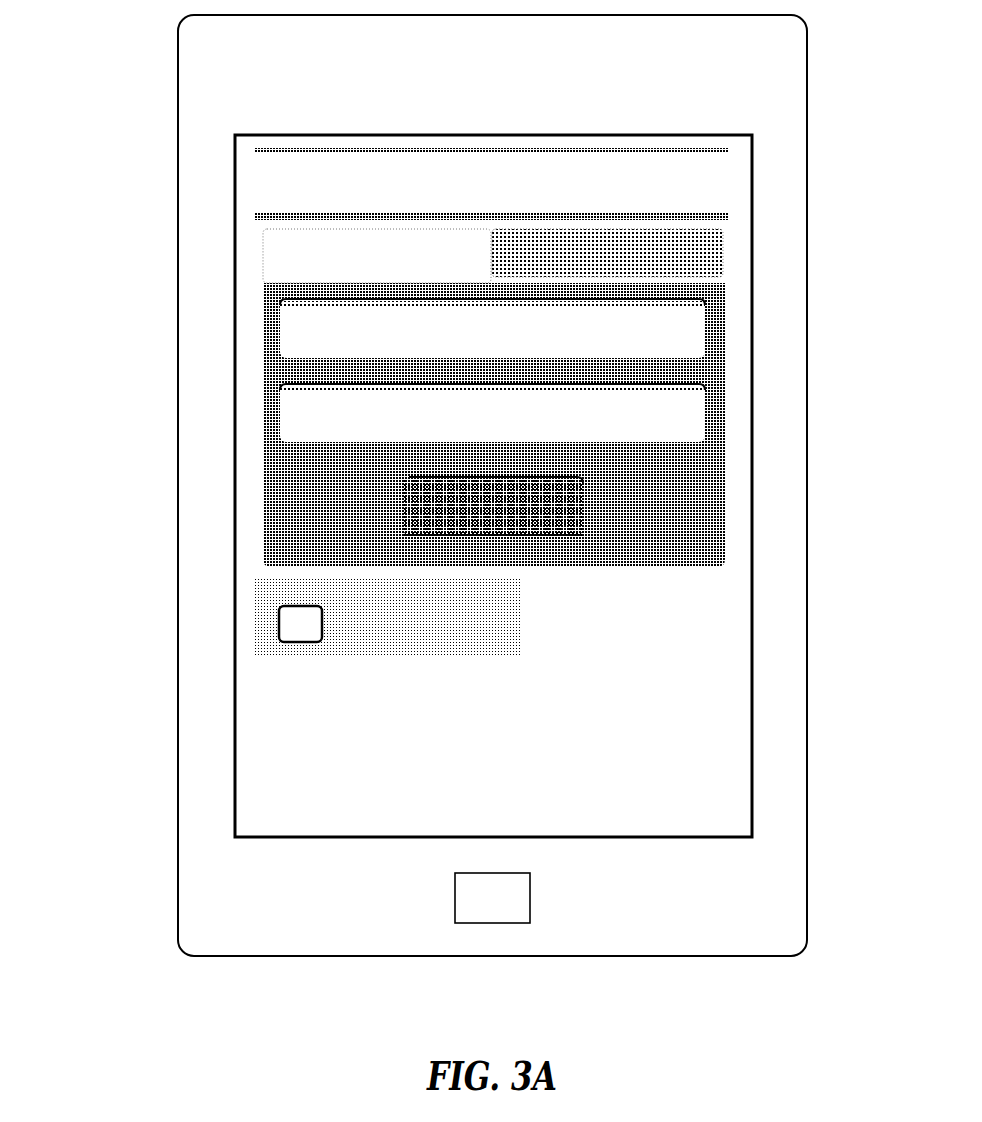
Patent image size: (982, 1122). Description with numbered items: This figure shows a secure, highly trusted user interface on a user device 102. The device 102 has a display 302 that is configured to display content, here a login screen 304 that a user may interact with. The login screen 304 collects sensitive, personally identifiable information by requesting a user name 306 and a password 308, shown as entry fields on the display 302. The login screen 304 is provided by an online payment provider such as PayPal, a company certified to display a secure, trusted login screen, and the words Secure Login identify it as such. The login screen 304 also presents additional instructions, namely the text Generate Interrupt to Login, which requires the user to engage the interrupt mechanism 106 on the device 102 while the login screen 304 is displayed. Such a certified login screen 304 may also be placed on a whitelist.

The device 102 is at (178, 296).
The interrupt mechanism 106 is at (455, 888).
The display 302 is at (727, 820).
The login screen 304 is at (257, 163).
The user name 306 is at (283, 347).
The password 308 is at (280, 417).